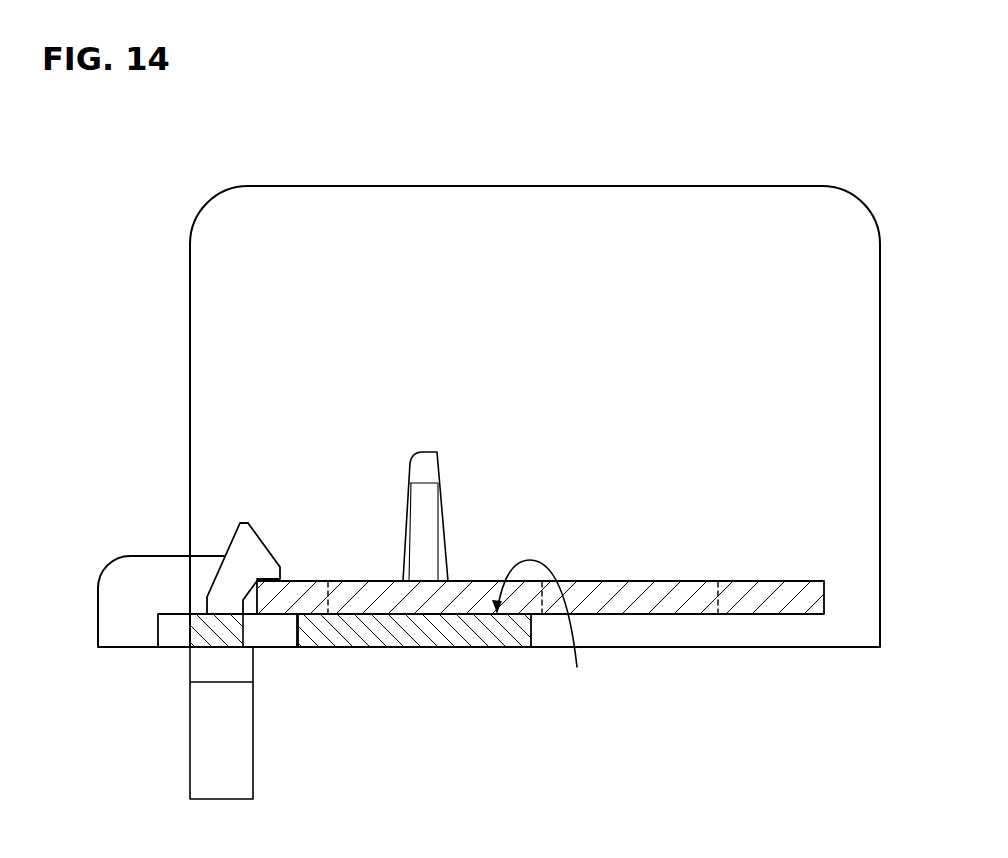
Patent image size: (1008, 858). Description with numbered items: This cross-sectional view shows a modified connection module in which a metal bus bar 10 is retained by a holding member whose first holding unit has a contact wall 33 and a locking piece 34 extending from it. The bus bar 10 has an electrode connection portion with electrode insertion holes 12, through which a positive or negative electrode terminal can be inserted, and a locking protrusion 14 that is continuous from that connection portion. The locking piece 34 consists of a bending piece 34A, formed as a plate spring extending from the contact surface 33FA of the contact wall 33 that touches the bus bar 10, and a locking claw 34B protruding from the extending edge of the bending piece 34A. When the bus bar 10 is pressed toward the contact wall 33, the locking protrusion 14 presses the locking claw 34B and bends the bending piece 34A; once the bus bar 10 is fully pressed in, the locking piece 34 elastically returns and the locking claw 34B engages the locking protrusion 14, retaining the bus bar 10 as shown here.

The bus bar 10 is at (806, 546).
The electrode insertion hole 12 is at (712, 590).
The locking protrusion 14 is at (312, 603).
The contact wall 33 is at (420, 637).
The contact surface 33FA is at (553, 629).
The locking piece 34 is at (166, 521).
The bending piece 34A is at (227, 573).
The locking claw 34B is at (260, 553).